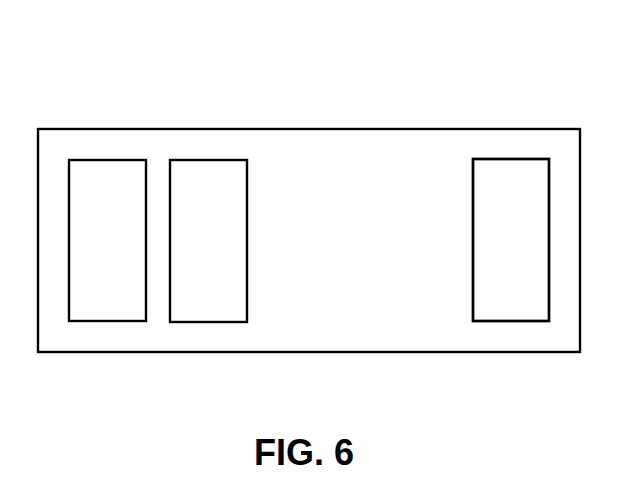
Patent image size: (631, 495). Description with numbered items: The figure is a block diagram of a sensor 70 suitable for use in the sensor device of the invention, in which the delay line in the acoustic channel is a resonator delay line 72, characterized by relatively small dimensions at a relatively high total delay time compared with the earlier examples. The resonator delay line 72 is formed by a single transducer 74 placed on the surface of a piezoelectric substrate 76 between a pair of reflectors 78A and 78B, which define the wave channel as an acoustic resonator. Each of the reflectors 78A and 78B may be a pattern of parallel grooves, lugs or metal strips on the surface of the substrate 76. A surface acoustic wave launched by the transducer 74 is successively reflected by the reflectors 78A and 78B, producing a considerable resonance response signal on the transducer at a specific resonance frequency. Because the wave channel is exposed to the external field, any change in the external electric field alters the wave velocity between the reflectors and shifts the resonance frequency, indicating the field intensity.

The sensor 70 is at (100, 93).
The resonator delay line 72 is at (385, 145).
The transducer 74 is at (202, 160).
The piezoelectric substrate 76 is at (512, 159).
The reflector 78A is at (104, 322).
The reflector 78B is at (510, 322).